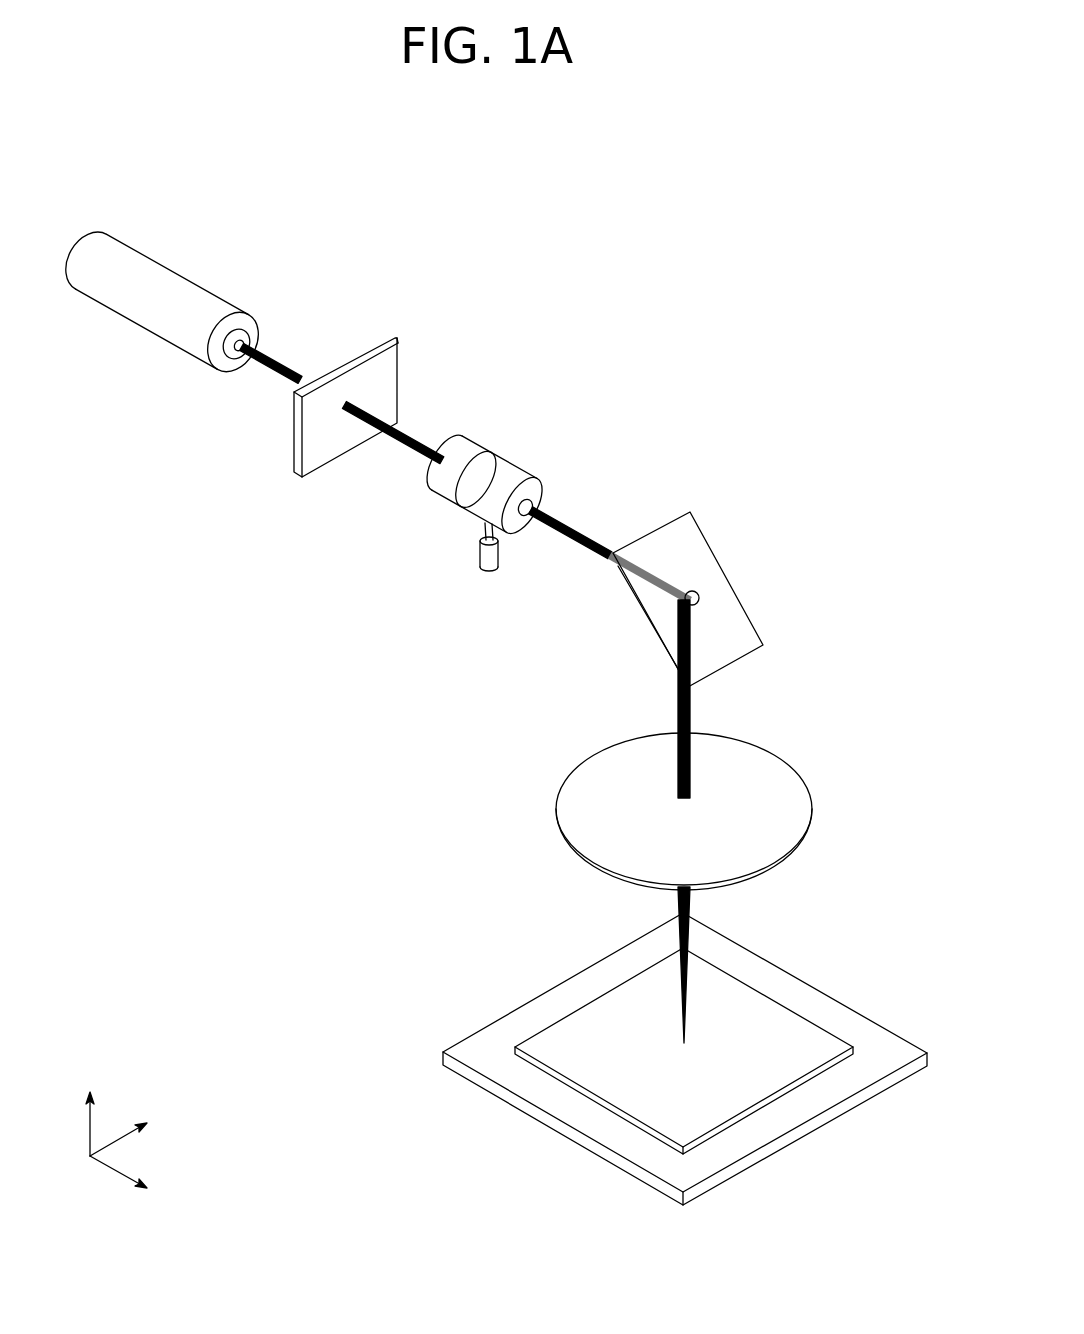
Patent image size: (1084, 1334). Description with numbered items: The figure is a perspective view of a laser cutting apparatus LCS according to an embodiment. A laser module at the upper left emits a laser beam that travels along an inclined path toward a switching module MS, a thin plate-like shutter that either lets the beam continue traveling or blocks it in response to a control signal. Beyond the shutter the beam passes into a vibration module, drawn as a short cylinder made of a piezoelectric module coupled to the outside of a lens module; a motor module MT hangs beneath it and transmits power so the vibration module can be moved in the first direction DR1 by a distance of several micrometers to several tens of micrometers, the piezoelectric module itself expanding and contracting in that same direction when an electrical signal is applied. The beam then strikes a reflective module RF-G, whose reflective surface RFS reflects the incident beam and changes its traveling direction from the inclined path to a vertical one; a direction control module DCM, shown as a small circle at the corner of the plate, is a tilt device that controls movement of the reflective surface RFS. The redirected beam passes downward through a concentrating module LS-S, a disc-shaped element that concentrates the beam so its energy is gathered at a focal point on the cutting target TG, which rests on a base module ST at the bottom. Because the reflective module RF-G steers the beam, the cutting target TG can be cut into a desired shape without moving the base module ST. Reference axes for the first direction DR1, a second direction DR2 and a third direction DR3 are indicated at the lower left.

The laser cutting apparatus LCS is at (629, 208).
The switching module MS is at (394, 338).
The motor module MT is at (488, 553).
The reflective surface RFS is at (673, 550).
The reflective module RF-G is at (713, 541).
The direction control module DCM is at (698, 590).
The concentrating module LS-S is at (768, 765).
The base module ST is at (860, 1097).
The cutting target TG is at (760, 1097).
The first direction DR1 is at (141, 1180).
The second direction DR2 is at (141, 1132).
The third direction DR3 is at (90, 1109).